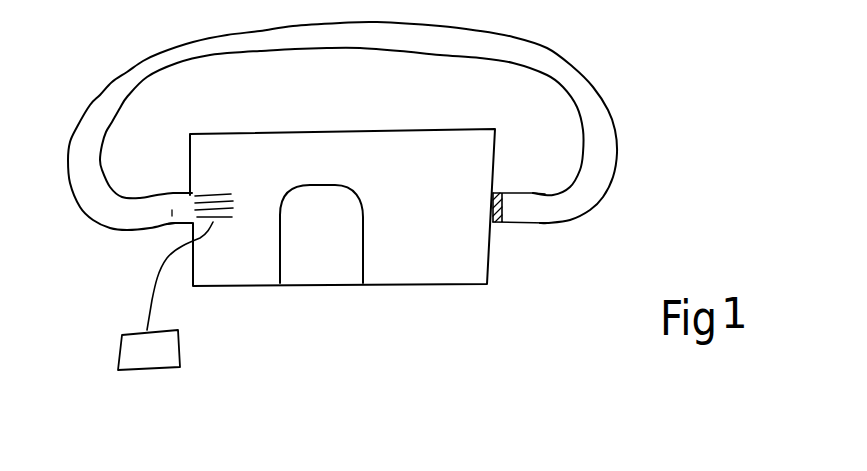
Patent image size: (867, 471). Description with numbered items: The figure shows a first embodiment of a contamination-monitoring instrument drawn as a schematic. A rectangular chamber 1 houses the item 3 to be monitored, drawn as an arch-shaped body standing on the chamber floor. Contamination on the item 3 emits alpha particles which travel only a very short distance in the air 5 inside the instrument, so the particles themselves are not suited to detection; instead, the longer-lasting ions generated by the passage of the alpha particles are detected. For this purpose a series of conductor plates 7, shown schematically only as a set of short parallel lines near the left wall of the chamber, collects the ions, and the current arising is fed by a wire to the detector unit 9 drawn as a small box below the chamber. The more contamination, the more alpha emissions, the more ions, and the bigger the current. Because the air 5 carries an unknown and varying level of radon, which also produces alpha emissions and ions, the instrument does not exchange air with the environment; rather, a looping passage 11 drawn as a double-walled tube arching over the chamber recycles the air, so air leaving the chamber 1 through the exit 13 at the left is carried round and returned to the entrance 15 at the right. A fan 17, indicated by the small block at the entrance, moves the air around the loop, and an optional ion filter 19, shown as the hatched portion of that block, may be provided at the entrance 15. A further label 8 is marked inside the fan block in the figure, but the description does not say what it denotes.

The chamber 1 is at (445, 272).
The item 3 is at (313, 287).
The air 5 is at (417, 169).
The conductor plates 7 is at (223, 220).
The aperture 8 is at (512, 208).
The detector unit 9 is at (157, 350).
The passage 11 is at (508, 50).
The exit 13 is at (172, 227).
The entrance 15 is at (545, 210).
The fan 17 is at (520, 222).
The ion filter 19 is at (503, 222).